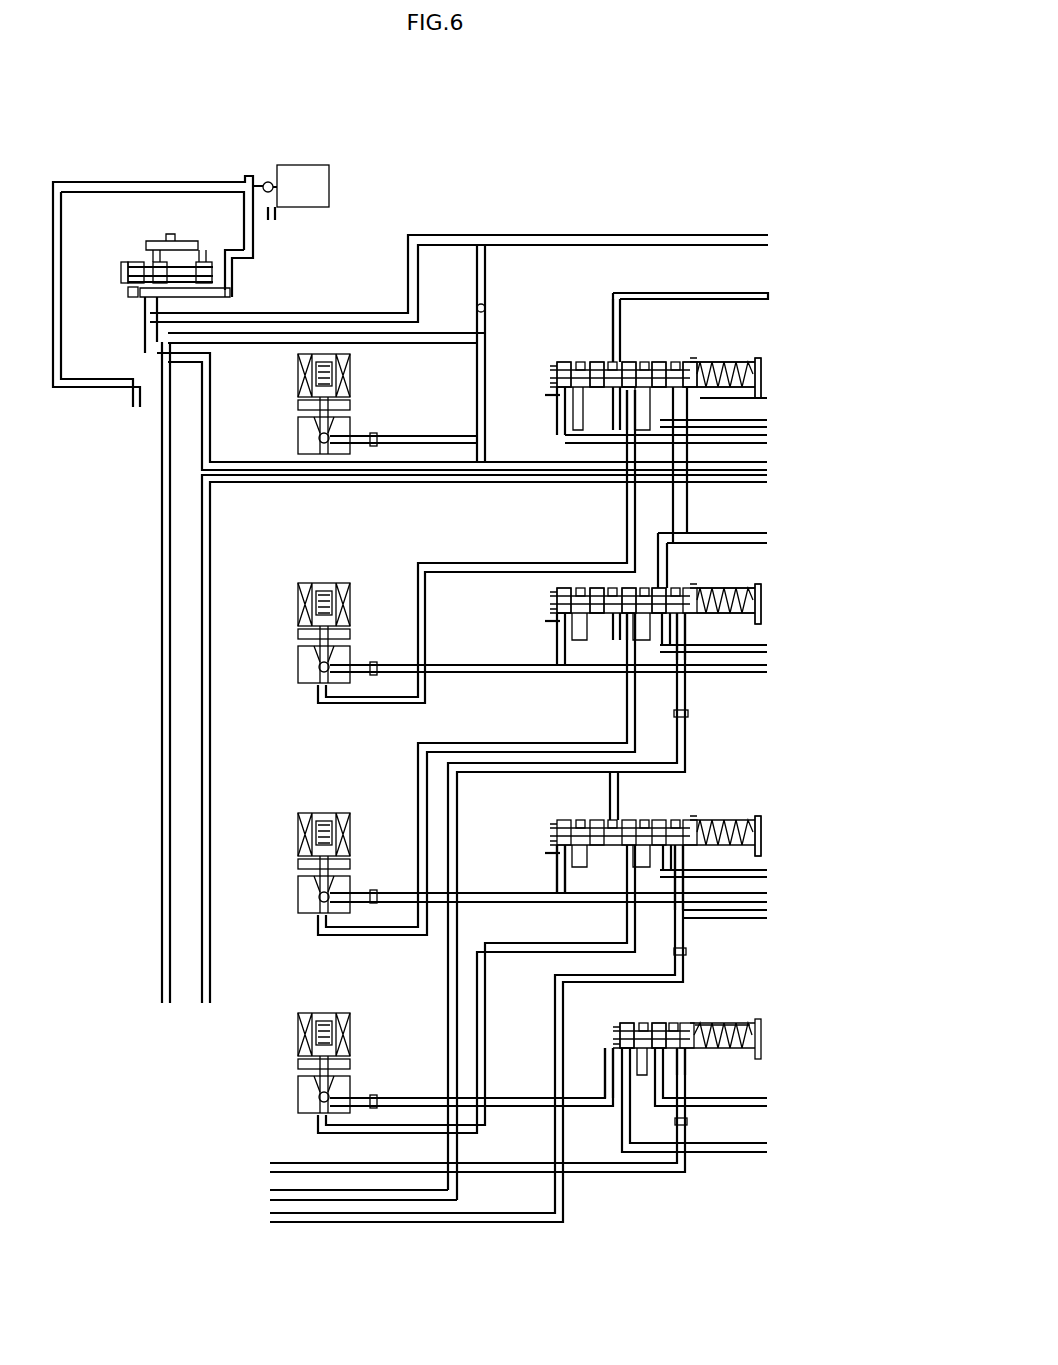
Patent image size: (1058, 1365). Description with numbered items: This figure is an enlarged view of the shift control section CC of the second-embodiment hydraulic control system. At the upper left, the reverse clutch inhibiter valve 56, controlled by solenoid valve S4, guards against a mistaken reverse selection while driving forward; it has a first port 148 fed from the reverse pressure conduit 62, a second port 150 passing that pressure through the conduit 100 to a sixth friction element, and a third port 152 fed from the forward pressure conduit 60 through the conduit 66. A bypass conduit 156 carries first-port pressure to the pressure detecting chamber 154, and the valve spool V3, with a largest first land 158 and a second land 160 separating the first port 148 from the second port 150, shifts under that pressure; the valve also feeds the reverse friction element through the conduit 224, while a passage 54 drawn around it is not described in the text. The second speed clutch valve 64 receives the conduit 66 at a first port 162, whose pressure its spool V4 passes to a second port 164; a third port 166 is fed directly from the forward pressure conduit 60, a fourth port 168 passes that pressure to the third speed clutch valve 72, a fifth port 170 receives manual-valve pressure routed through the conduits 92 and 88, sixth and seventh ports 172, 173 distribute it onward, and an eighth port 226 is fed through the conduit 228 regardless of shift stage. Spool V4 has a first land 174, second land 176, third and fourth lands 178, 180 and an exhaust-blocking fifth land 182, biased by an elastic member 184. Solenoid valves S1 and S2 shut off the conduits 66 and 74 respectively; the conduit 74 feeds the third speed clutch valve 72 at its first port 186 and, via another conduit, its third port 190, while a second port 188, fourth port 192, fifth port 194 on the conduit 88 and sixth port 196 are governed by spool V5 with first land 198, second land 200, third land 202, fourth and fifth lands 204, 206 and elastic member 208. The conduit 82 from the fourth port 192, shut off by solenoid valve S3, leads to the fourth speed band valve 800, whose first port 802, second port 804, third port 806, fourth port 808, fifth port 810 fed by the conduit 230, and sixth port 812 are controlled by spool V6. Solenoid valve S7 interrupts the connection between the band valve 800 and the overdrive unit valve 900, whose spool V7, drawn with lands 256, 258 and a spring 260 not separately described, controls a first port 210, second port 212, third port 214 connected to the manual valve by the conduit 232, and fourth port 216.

The shift control section CC is at (420, 145).
The fluid passage loop 54 is at (125, 180).
The solenoid valve S4 is at (296, 192).
The reverse clutch inhibiter valve 56 is at (260, 274).
The valve spool V3 is at (128, 272).
The bypass conduit 156 is at (163, 234).
The second land 160 is at (153, 262).
The first land 158 is at (205, 258).
The third port 152 is at (130, 288).
The second port 150 is at (145, 300).
The pressure detecting chamber 154 is at (225, 290).
The first port 148 is at (162, 318).
The conduit 224 is at (447, 240).
The conduit 228 is at (688, 292).
The reverse pressure conduit 62 is at (162, 662).
The forward pressure conduit 60 is at (212, 737).
The conduit 100 is at (242, 462).
The conduit 66 is at (386, 436).
The conduit 74 is at (418, 615).
The conduit 82 is at (418, 792).
The conduit 88 is at (448, 995).
The conduit 92 is at (457, 1190).
The conduit 230 is at (563, 1200).
The conduit 232 is at (520, 1163).
The solenoid valve S1 is at (350, 380).
The solenoid valve S2 is at (298, 607).
The solenoid valve S3 is at (298, 835).
The solenoid valve S7 is at (298, 1038).
The valve spool V4 is at (541, 376).
The second speed clutch valve 64 is at (788, 375).
The first land 174 is at (560, 370).
The fifth land 182 is at (590, 366).
The eighth port 226 is at (615, 360).
The second land 176 is at (622, 362).
The fourth land 180 is at (650, 372).
The third land 178 is at (686, 366).
The elastic member 184 is at (718, 372).
The first port 162 is at (552, 382).
The second port 164 is at (565, 396).
The sixth port 172 is at (690, 392).
The fifth port 170 is at (675, 395).
The seventh port 173 is at (660, 395).
The third port 166 is at (605, 397).
The fourth port 168 is at (630, 397).
The valve spool V5 is at (541, 602).
The third speed clutch valve 72 is at (788, 599).
The first land 198 is at (556, 594).
The fifth land 206 is at (595, 592).
The third port 190 is at (620, 592).
The sixth port 196 is at (665, 598).
The elastic member 208 is at (720, 598).
The first port 186 is at (552, 624).
The second port 188 is at (565, 622).
The second land 200 is at (625, 620).
The fourth port 192 is at (635, 622).
The third land 202 is at (685, 622).
The fifth port 194 is at (668, 622).
The fourth land 204 is at (680, 680).
The valve spool V6 is at (541, 836).
The fourth speed band valve 800 is at (788, 833).
The third port 806 is at (614, 818).
The first port 802 is at (552, 854).
The second port 804 is at (556, 862).
The fifth port 810 is at (680, 855).
The fourth port 808 is at (630, 852).
The sixth port 812 is at (680, 862).
The valve spool V7 is at (603, 1040).
The overdrive unit valve 900 is at (788, 1036).
The spool land 256 is at (623, 1030).
The spool land 258 is at (658, 1030).
The spring 260 is at (722, 1034).
The first port 210 is at (613, 1060).
The second port 212 is at (630, 1058).
The third port 214 is at (665, 1058).
The fourth port 216 is at (680, 1060).